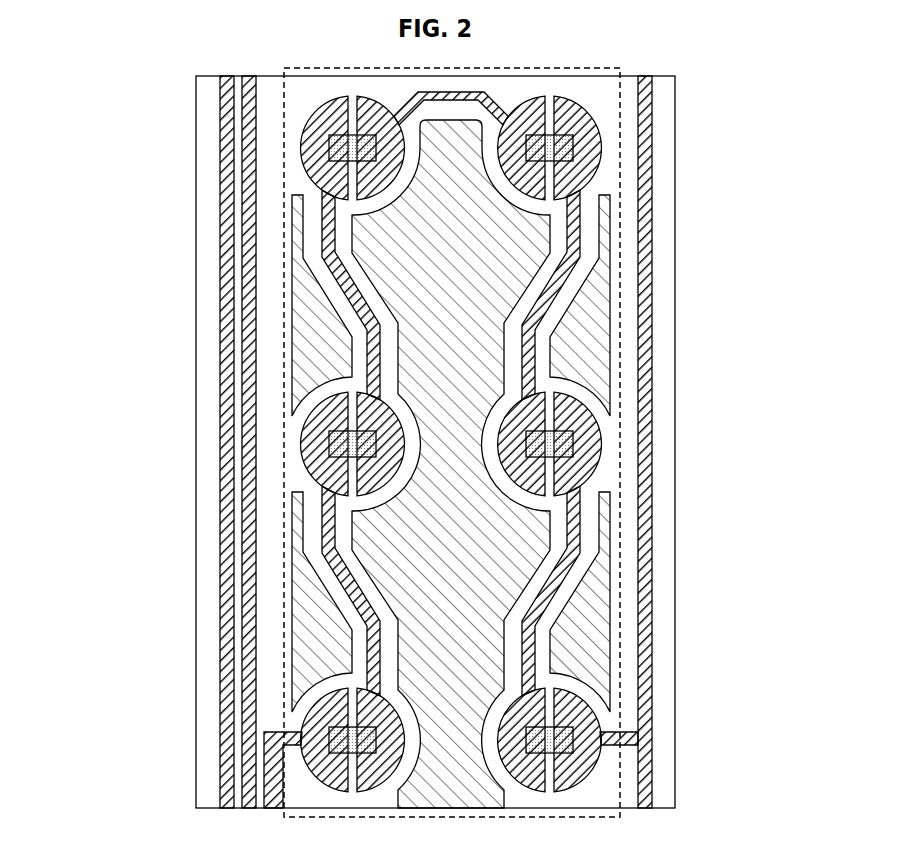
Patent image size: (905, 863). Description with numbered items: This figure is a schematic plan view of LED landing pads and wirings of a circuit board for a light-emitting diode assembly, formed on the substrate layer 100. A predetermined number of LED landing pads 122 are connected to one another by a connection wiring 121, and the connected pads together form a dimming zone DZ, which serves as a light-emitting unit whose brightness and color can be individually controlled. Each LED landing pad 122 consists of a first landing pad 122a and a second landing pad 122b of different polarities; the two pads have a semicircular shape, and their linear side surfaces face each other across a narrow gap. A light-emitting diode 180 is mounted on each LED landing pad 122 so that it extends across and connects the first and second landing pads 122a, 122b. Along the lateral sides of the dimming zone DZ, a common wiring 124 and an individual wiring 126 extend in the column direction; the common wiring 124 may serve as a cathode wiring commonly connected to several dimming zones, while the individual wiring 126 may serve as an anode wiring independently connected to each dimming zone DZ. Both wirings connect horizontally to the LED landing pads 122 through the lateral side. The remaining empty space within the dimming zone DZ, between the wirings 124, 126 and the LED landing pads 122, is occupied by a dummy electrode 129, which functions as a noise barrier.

The substrate layer 100 is at (665, 773).
The dimming zone DZ is at (274, 326).
The connection wiring 121 is at (557, 290).
The LED landing pad 122 is at (217, 452).
The first landing pad 122a is at (300, 432).
The second landing pad 122b is at (333, 488).
The common wiring 124 is at (653, 660).
The individual wiring 126 is at (223, 532).
The dummy electrode 129 is at (598, 243).
The light-emitting diode 180 is at (602, 135).